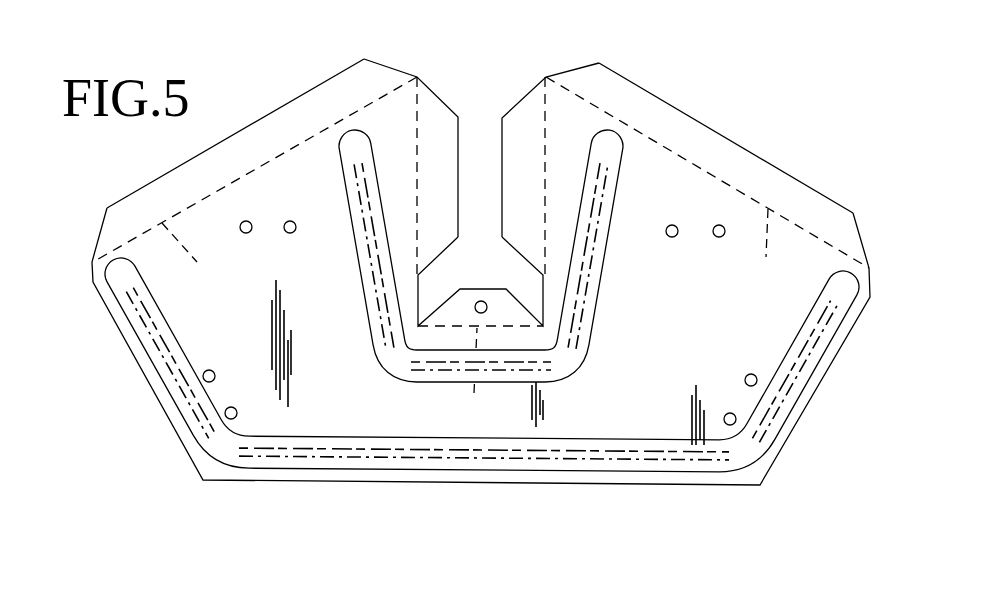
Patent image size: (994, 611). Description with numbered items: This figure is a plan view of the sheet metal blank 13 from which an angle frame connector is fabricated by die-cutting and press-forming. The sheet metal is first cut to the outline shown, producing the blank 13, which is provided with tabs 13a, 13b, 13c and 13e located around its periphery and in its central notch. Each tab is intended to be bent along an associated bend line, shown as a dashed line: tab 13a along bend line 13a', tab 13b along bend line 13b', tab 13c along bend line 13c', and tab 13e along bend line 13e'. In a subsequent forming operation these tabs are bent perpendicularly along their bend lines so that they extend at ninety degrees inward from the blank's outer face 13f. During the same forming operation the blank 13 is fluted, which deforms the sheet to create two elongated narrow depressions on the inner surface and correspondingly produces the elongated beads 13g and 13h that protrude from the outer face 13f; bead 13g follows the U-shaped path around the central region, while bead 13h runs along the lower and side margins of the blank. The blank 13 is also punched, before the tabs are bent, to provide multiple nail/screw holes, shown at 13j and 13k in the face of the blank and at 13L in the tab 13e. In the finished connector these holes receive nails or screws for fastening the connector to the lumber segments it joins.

The blank 13 is at (714, 104).
The tab 13a is at (255, 160).
The bend line 13a' is at (200, 255).
The tab 13b is at (707, 165).
The bend line 13b' is at (769, 247).
The tab 13c is at (481, 141).
The bend line 13c' is at (464, 147).
The tab 13e is at (480, 270).
The bend line 13e' is at (479, 374).
The outer face 13f is at (648, 348).
The elongated bead 13g is at (362, 283).
The elongated bead 13h is at (320, 437).
The nail/screw holes 13j is at (251, 231).
The nail/screw holes 13k is at (714, 234).
The nail/screw hole 13L is at (475, 310).